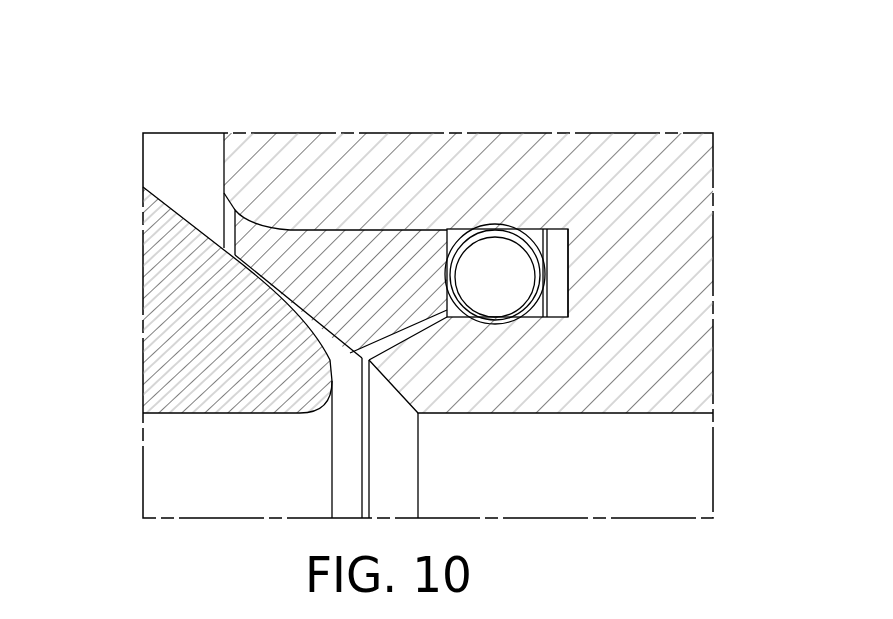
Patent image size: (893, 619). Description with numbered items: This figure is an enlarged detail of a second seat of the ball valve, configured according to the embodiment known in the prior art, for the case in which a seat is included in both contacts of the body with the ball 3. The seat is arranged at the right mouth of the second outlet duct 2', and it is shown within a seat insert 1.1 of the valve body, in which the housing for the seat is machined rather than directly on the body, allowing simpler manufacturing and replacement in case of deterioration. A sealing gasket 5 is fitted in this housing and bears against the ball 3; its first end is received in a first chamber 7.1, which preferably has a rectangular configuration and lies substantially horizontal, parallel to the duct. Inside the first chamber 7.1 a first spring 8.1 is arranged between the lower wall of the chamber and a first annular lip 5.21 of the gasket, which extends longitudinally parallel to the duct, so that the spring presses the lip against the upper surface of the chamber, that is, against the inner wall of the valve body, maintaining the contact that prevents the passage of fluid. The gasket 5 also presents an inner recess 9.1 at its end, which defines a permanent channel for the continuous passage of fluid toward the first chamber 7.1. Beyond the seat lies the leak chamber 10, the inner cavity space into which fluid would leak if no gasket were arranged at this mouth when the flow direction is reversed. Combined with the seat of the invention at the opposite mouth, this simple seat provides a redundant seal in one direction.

The leak chamber 10 is at (190, 178).
The seat insert 1.1 is at (338, 170).
The sealing gasket 5 is at (343, 278).
The first annular lip 5.21 is at (487, 225).
The first spring 8.1 is at (518, 247).
The first chamber 7.1 is at (553, 277).
The ball 3 is at (190, 337).
The inner recess 9.1 is at (384, 336).
The second outlet duct 2' is at (537, 475).